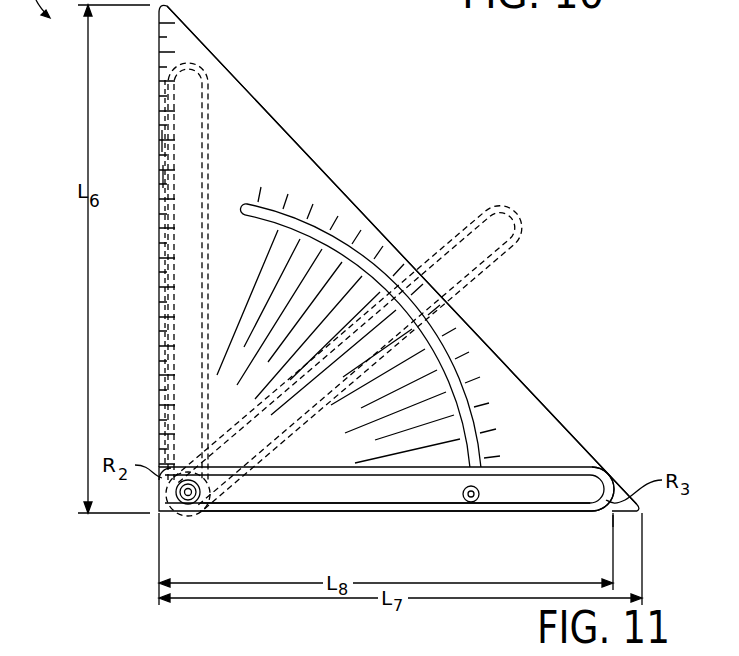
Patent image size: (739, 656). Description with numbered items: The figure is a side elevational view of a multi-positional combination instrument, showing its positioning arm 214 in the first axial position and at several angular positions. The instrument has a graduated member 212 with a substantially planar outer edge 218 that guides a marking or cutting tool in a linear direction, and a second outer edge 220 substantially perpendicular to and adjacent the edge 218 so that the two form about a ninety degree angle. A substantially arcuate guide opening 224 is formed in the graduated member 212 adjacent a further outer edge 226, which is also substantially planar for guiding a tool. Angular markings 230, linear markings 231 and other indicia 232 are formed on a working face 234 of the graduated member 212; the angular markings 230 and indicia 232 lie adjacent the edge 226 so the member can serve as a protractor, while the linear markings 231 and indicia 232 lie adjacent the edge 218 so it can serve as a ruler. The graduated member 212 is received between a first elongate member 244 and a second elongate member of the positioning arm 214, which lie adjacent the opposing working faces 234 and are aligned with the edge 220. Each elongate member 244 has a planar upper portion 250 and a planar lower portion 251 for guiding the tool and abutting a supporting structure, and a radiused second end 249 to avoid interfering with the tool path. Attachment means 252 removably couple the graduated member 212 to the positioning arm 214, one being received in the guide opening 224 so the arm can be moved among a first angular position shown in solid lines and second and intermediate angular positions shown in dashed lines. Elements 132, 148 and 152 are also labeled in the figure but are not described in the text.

The slot 132 is at (275, 500).
The corner of base 148 is at (159, 520).
The pivot 152 is at (188, 520).
The graduated member 212 is at (159, 78).
The positioning arm 214 is at (212, 88).
The outer edge 218 is at (161, 110).
The second outer edge 220 is at (644, 516).
The guide opening 224 is at (256, 206).
The outer edge 226 is at (320, 168).
The angular markings 230 is at (338, 262).
The linear markings 231 is at (162, 143).
The indicia 232 is at (163, 180).
The working face 234 is at (410, 262).
The first elongate member 244 is at (514, 505).
The second end 249 is at (612, 484).
The upper portion 250 is at (567, 466).
The lower portion 251 is at (608, 515).
The attachment means 252 is at (470, 502).